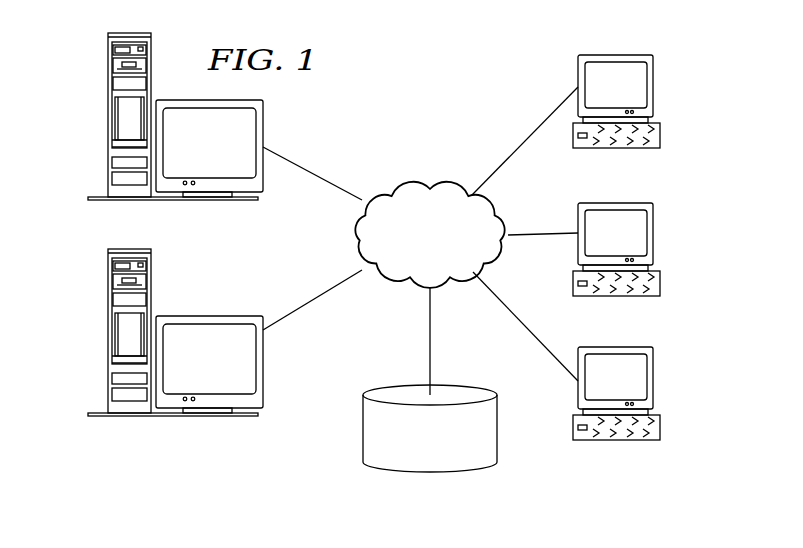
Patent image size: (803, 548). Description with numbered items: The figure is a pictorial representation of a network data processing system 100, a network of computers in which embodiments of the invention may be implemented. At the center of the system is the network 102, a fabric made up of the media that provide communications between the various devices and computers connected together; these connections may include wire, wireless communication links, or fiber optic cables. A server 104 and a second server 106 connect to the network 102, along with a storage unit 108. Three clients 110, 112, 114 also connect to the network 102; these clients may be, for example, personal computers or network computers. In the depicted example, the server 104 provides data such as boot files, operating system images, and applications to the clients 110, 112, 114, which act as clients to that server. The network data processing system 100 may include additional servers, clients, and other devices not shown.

The network data processing system 100 is at (484, 63).
The network 102 is at (398, 182).
The server 104 is at (108, 117).
The server 106 is at (108, 333).
The storage unit 108 is at (412, 472).
The client 110 is at (646, 116).
The client 112 is at (646, 264).
The client 114 is at (646, 408).